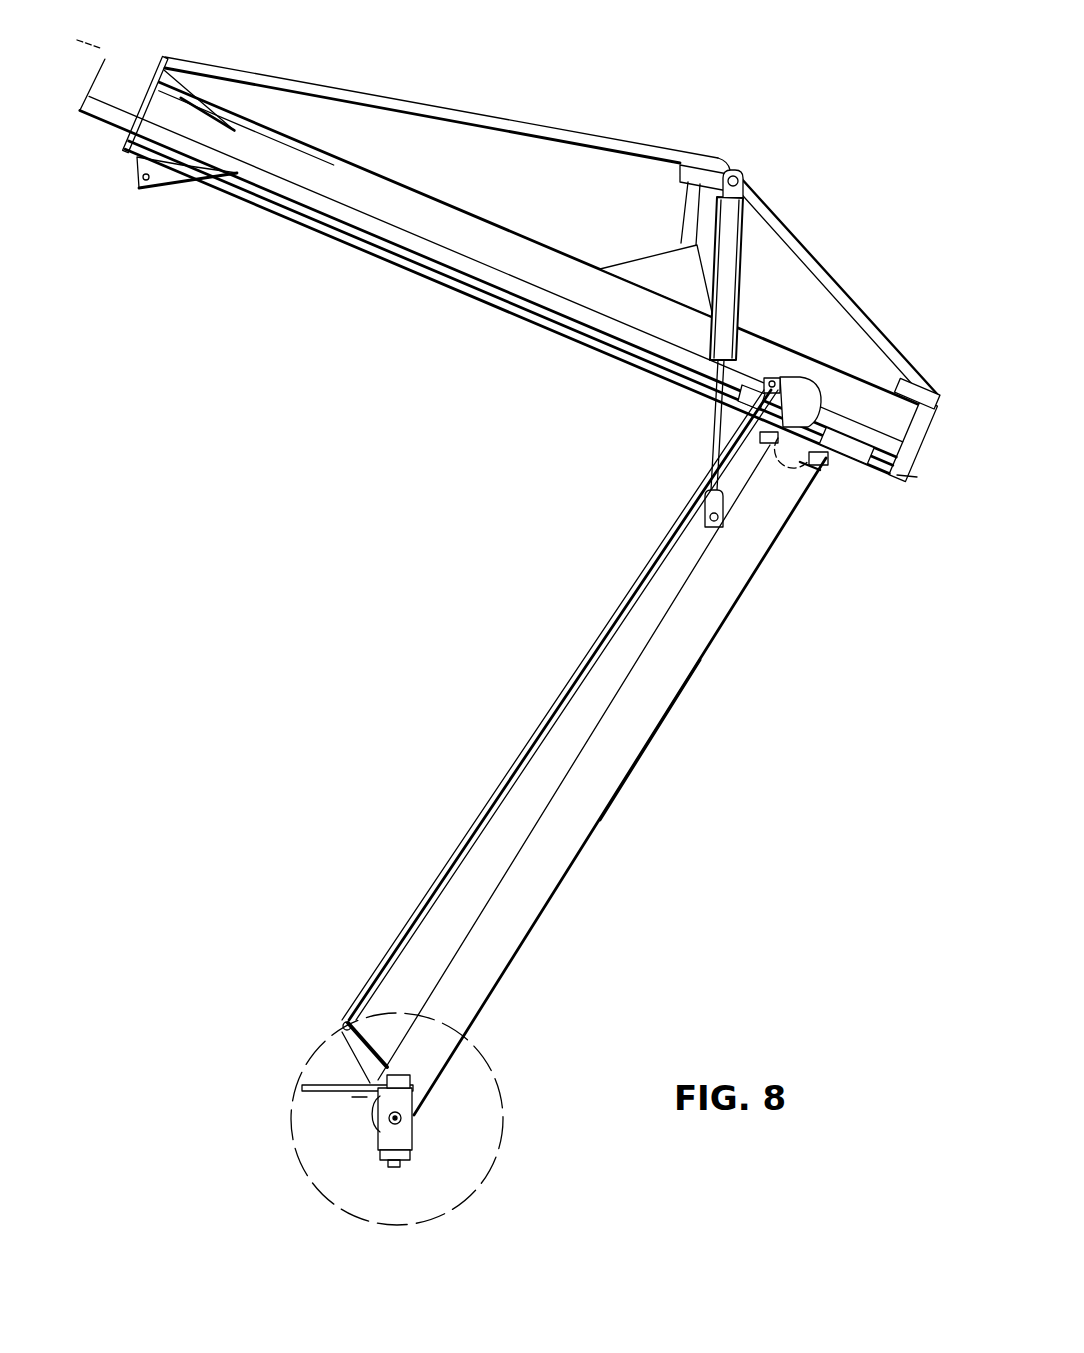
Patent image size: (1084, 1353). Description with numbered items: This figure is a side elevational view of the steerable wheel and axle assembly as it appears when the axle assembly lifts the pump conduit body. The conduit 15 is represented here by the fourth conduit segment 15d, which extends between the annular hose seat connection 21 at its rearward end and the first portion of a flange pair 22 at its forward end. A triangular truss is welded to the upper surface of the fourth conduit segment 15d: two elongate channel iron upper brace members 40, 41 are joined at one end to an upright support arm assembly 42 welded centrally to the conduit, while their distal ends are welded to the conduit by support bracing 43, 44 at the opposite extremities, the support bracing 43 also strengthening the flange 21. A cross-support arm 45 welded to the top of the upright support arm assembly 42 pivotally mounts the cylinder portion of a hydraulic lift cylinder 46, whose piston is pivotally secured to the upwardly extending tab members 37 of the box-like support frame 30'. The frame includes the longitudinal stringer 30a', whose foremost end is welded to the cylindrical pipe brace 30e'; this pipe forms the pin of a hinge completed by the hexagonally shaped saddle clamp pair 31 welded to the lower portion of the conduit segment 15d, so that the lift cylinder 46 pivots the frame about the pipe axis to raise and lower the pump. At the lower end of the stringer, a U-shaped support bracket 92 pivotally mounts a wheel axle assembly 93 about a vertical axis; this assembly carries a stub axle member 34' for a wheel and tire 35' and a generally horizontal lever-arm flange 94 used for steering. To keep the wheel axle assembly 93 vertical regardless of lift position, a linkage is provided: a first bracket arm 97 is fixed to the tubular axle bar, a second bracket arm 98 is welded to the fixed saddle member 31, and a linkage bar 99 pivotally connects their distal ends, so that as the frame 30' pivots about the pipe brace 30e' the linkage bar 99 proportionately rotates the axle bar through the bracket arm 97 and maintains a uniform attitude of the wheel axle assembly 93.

The conduit 15 is at (97, 47).
The fourth conduit segment 15d is at (372, 230).
The annular hose seat connection 21 is at (114, 117).
The flange pair 22 is at (905, 478).
The box-like support frame 30' is at (602, 780).
The longitudinal stringer 30a' is at (650, 740).
The cylindrical pipe brace 30e' is at (826, 490).
The saddle clamp pair 31 is at (816, 446).
The stub axle member 34' is at (360, 1135).
The wheel and tire 35' is at (420, 1119).
The tab members 37 is at (692, 532).
The upper brace member 40 is at (490, 124).
The upper brace member 41 is at (785, 236).
The upright support arm assembly 42 is at (688, 214).
The support bracing 43 is at (177, 97).
The support bracing 44 is at (915, 395).
The cross-support arm 45 is at (715, 172).
The hydraulic lift cylinder 46 is at (738, 292).
The U-shaped support bracket 92 is at (406, 1086).
The wheel axle assembly 93 is at (413, 1140).
The lever-arm flange 94 is at (316, 1087).
The first bracket arm 97 is at (380, 1037).
The second bracket arm 98 is at (797, 388).
The linkage bar 99 is at (490, 800).